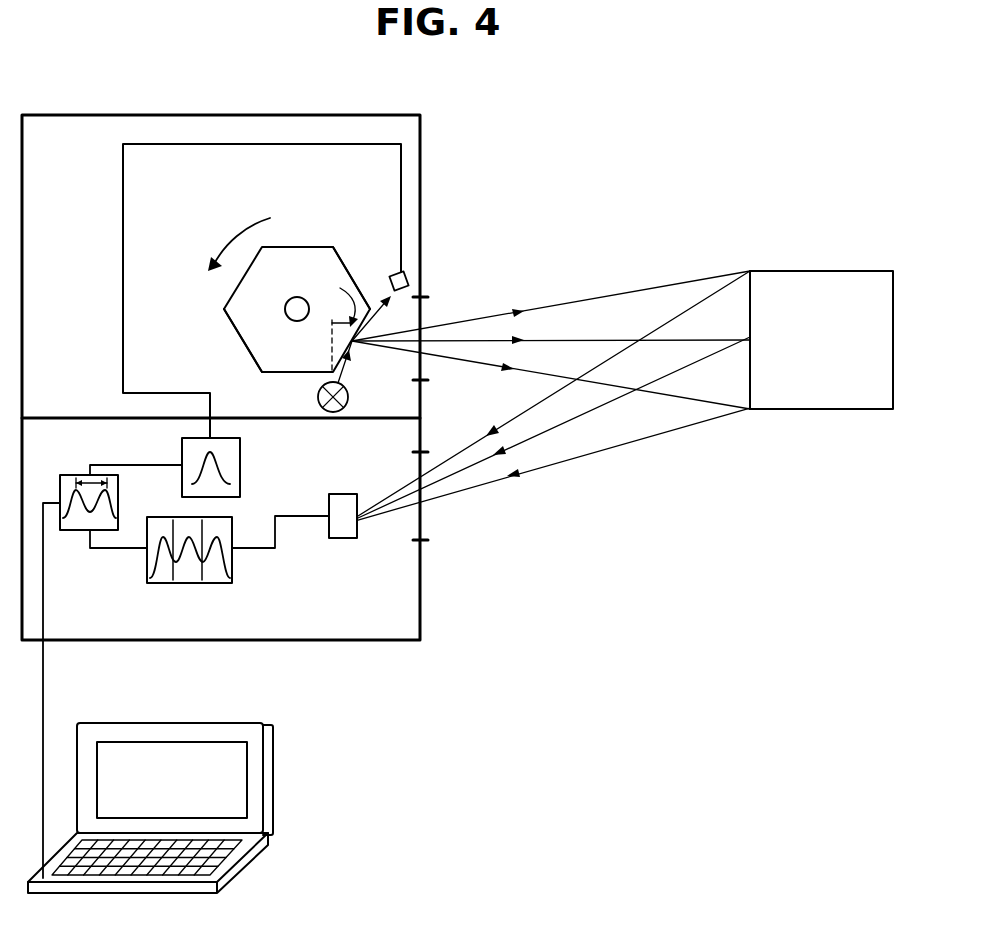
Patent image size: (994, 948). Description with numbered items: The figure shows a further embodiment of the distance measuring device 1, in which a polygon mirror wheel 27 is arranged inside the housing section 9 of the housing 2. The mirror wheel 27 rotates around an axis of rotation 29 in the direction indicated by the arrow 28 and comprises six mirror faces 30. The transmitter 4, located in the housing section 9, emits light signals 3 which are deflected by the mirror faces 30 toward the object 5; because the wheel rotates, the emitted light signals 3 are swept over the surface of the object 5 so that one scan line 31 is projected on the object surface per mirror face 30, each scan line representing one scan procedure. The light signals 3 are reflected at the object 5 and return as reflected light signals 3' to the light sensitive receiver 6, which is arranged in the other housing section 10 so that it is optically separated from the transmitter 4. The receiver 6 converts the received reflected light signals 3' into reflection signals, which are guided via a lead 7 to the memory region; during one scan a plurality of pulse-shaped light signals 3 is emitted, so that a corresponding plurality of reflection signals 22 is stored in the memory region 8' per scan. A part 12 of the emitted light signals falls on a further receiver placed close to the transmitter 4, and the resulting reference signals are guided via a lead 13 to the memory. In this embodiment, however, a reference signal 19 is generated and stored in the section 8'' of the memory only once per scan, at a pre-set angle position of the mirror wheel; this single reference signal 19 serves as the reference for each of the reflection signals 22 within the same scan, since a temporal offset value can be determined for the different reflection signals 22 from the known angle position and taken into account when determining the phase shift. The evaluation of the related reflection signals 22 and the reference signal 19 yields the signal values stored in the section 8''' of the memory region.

The measuring device 1 is at (48, 92).
The housing 2 is at (248, 115).
The light signals 3 is at (551, 340).
The reflected light signals 3' is at (554, 395).
The transmitter 4 is at (318, 397).
The object 5 is at (824, 296).
The receiver 6 is at (340, 540).
The lead 7 is at (277, 530).
The memory region 8' is at (205, 570).
The section of the memory region 8'' is at (212, 463).
The section of the memory region 8''' is at (89, 530).
The housing section 9 is at (96, 138).
The housing section 10 is at (385, 620).
The part of the light signals 12 is at (383, 290).
The lead 13 is at (123, 236).
The reference signal 19 is at (197, 455).
The reflection signals 22 is at (168, 580).
The polygon mirror wheel 27 is at (243, 295).
The arrow 28 is at (254, 223).
The axis of rotation 29 is at (297, 304).
The mirror faces 30 is at (243, 343).
The scan line 31 is at (747, 295).